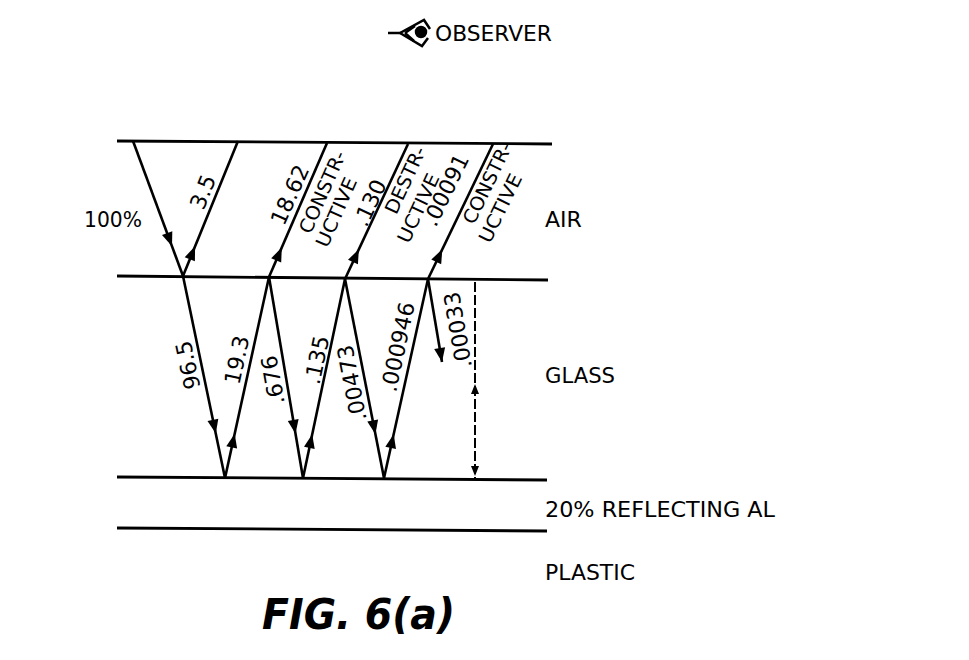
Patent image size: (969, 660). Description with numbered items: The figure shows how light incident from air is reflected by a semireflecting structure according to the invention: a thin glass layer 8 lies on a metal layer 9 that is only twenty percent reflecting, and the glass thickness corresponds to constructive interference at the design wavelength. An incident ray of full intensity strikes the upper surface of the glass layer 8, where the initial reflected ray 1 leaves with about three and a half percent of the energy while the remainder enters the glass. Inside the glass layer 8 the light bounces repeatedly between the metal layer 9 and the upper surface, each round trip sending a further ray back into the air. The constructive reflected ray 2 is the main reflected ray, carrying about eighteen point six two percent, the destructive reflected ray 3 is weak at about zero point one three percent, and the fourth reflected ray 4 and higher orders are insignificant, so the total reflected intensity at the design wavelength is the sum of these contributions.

The glass layer 8 is at (143, 359).
The metal layer 9 is at (140, 501).
The initial reflected ray R1 1 is at (210, 208).
The constructive reflected ray R2 2 is at (298, 210).
The destructive reflected ray R3 3 is at (376, 211).
The fourth reflected ray R4 4 is at (460, 211).